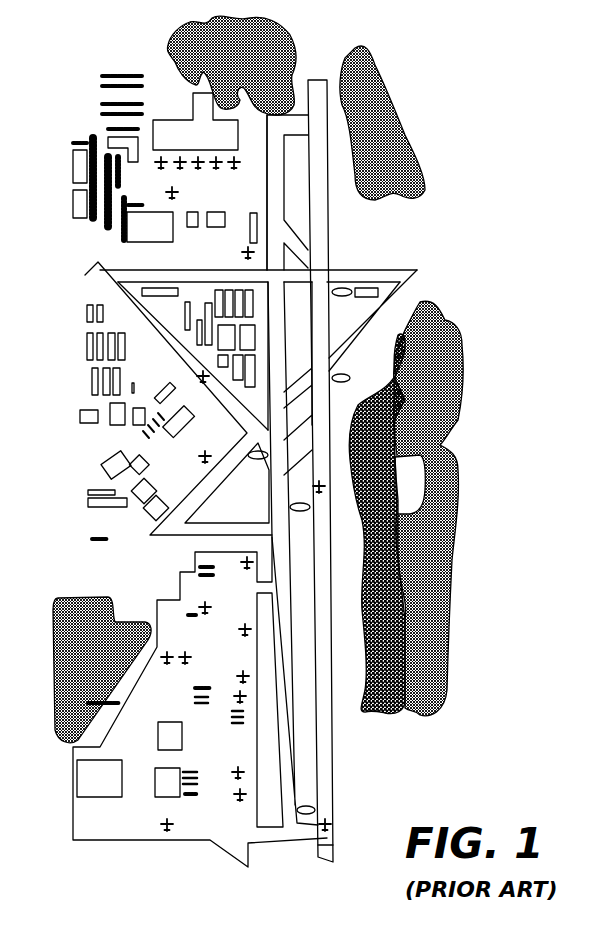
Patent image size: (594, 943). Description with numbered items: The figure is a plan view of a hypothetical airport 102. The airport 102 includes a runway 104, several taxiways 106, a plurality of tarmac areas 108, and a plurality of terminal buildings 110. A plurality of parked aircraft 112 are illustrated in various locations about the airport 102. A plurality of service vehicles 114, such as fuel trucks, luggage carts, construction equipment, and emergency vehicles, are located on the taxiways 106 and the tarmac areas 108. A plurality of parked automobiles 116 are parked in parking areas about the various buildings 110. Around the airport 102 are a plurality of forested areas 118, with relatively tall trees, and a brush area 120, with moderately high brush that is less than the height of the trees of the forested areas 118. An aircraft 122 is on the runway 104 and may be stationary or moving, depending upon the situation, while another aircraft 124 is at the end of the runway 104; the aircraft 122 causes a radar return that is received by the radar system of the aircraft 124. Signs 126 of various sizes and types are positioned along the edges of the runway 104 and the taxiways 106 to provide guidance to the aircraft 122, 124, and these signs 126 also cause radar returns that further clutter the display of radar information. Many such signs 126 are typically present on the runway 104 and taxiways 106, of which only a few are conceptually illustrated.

The hypothetical airport 102 is at (470, 207).
The runway 104 is at (333, 745).
The taxiways 106 is at (340, 268).
The tarmac areas 108 is at (150, 255).
The terminal buildings 110 is at (205, 110).
The parked aircraft 112 is at (205, 178).
The service vehicles 114 is at (201, 700).
The parked automobiles 116 is at (75, 128).
The forested areas 118 is at (168, 31).
The brush area 120 is at (385, 692).
The aircraft 122 is at (333, 492).
The aircraft 124 is at (340, 840).
The signs 126 is at (350, 290).